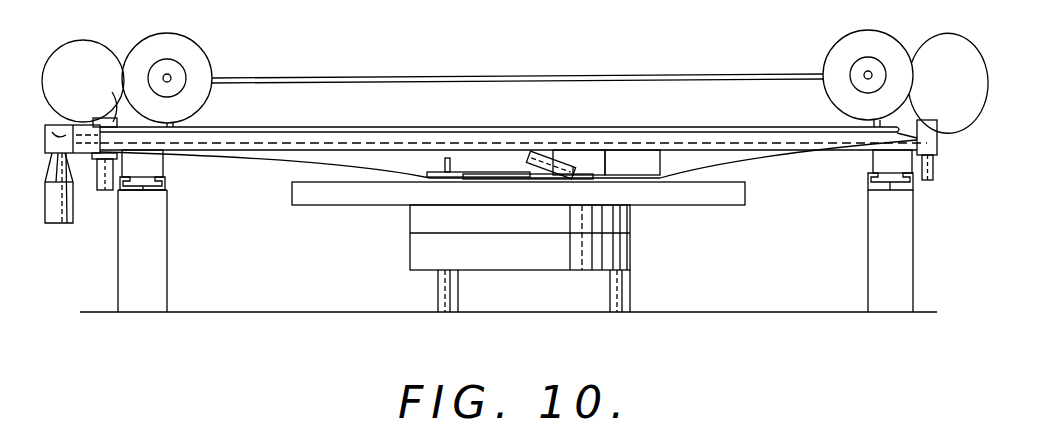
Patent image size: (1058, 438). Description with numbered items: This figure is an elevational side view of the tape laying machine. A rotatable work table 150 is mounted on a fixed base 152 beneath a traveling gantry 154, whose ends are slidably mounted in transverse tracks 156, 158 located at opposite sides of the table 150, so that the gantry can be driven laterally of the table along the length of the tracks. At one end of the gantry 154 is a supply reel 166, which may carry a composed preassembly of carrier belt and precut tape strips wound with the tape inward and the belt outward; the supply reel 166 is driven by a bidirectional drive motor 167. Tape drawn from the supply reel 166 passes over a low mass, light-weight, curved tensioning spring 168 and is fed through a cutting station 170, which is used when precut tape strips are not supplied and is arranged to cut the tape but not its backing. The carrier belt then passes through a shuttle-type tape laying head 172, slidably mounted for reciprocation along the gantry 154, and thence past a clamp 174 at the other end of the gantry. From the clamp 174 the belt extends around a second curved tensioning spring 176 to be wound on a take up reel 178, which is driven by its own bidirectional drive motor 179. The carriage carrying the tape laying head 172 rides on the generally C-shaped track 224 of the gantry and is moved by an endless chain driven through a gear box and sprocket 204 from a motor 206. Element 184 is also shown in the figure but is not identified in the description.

The base plate 150 is at (715, 206).
The housing 152 is at (525, 265).
The belt 154 is at (452, 83).
The left support column 156 is at (168, 183).
The right support column 158 is at (868, 178).
The left pulley 166 is at (186, 40).
The left pulley hub 167 is at (182, 72).
The left drive wheel 168 is at (63, 56).
The guide rail 170 is at (113, 117).
The carriage 172 is at (537, 186).
The right end block 174 is at (935, 147).
The right drive wheel 176 is at (980, 57).
The right pulley 178 is at (850, 36).
The right pulley hub 179 is at (850, 62).
The carriage housing 184 is at (732, 177).
The left end block 204 is at (50, 126).
The hanging bracket 206 is at (62, 223).
The cable 224 is at (775, 153).